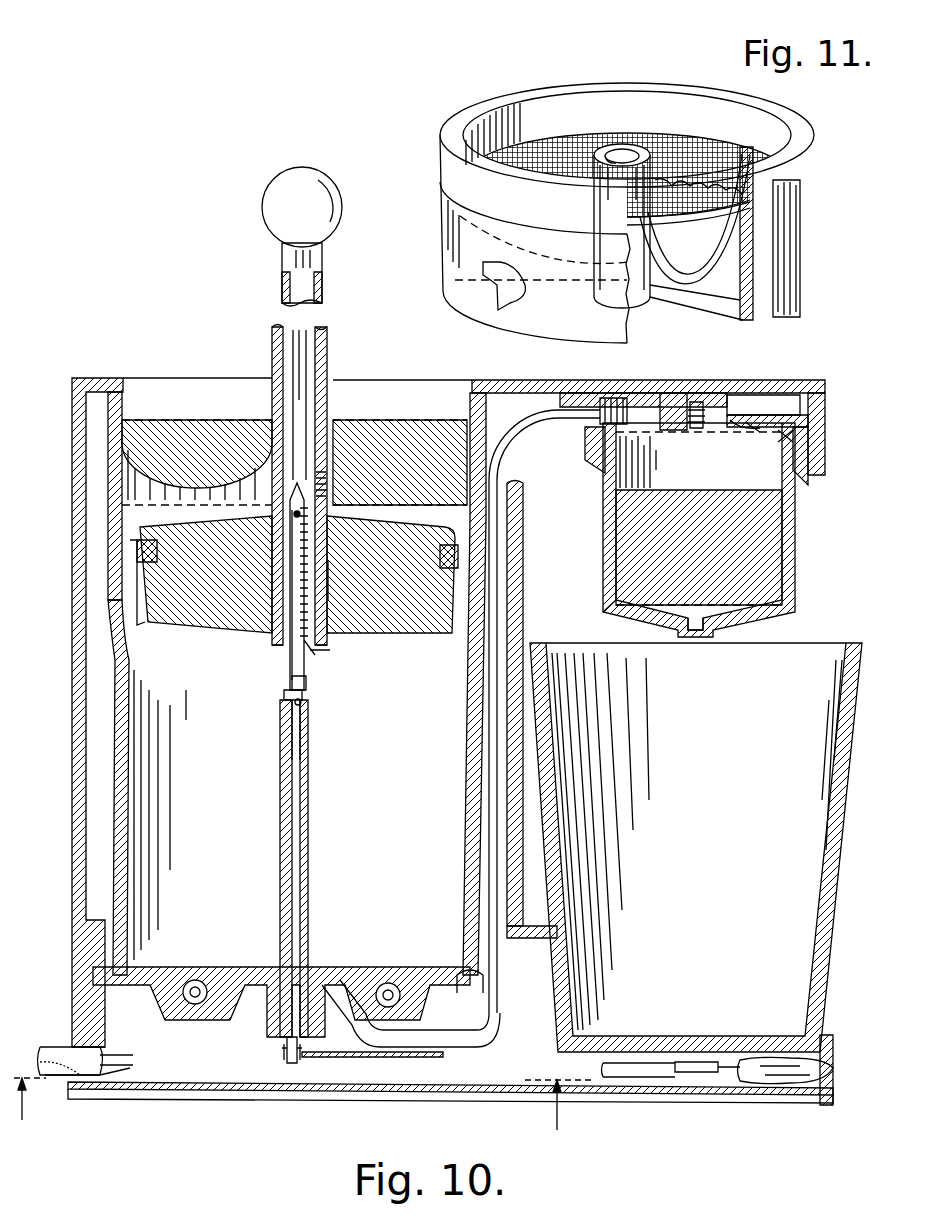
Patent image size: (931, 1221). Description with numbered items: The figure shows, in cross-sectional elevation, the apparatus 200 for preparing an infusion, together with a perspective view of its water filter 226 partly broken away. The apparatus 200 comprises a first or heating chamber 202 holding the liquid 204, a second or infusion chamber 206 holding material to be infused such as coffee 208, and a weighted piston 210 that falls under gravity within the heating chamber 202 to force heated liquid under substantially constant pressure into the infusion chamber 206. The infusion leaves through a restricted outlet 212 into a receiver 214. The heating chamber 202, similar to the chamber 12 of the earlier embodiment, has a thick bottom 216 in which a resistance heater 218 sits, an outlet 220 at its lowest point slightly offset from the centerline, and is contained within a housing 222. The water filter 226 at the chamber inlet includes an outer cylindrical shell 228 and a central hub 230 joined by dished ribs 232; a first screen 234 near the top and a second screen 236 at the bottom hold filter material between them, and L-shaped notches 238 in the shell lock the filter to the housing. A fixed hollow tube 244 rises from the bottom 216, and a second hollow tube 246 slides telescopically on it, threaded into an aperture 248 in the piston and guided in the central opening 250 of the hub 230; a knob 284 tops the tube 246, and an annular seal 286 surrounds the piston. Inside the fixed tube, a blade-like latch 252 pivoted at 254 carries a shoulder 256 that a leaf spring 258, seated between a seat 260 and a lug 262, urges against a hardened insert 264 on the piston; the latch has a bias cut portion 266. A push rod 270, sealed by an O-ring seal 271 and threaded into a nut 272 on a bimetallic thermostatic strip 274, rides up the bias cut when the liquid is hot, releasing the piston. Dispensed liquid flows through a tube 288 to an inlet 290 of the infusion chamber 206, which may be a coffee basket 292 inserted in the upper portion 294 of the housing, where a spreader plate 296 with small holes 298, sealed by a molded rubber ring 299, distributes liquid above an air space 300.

In FIG. 10, the apparatus 200 is at (184, 282).
In FIG. 10, the first or heating chamber 202 is at (118, 832).
In FIG. 10, the liquid 204 is at (242, 836).
In FIG. 10, the second or infusion chamber 206 is at (797, 546).
In FIG. 10, the coffee 208 is at (678, 553).
In FIG. 10, the weighted piston 210 is at (372, 590).
In FIG. 10, the restricted outlet 212 is at (701, 640).
In FIG. 10, the receiver 214 is at (832, 893).
In FIG. 10, the bottom 216 is at (255, 977).
In FIG. 10, the resistance heater 218 is at (197, 1006).
In FIG. 10, the outlet 220 is at (327, 984).
In FIG. 10, the housing 222 is at (73, 637).
In FIG. 10, the water filter 226 is at (137, 378).
In FIG. 11, the water filter 226 is at (501, 94).
In FIG. 11, the outer cylindrical shell 228 is at (568, 96).
In FIG. 11, the central hub 230 is at (632, 150).
In FIG. 11, the ribs 232 is at (697, 293).
In FIG. 11, the first screen 234 is at (520, 158).
In FIG. 11, the second screen 236 is at (648, 200).
In FIG. 11, the L-shaped notches 238 is at (508, 303).
In FIG. 10, the fixed hollow tube 244 is at (310, 866).
In FIG. 10, the second hollow tube 246 is at (328, 338).
In FIG. 10, the threaded aperture 248 is at (318, 544).
In FIG. 10, the central opening 250 is at (308, 385).
In FIG. 11, the central opening 250 is at (618, 146).
In FIG. 10, the latch 252 is at (290, 575).
In FIG. 10, the pivot 254 is at (328, 490).
In FIG. 10, the shoulder 256 is at (326, 647).
In FIG. 10, the leaf spring 258 is at (292, 600).
In FIG. 10, the seat 260 is at (290, 697).
In FIG. 10, the lug 262 is at (295, 517).
In FIG. 10, the hardened portion or insert 264 is at (268, 644).
In FIG. 10, the bias cut portion 266 is at (308, 679).
In FIG. 10, the push rod 270 is at (303, 760).
In FIG. 10, the O-ring seal 271 is at (305, 702).
In FIG. 10, the nut 272 is at (298, 1060).
In FIG. 10, the bimetallic thermostatic strip 274 is at (420, 1060).
In FIG. 10, the knob 284 is at (264, 190).
In FIG. 10, the annular seal 286 is at (120, 592).
In FIG. 10, the tube 288 is at (495, 878).
In FIG. 10, the inlet 290 is at (685, 428).
In FIG. 10, the coffee basket 292 is at (796, 581).
In FIG. 10, the upper portion of the housing 294 is at (787, 382).
In FIG. 10, the spreader plate 296 is at (790, 437).
In FIG. 10, the holes 298 is at (667, 398).
In FIG. 10, the molded rubber ring 299 is at (760, 430).
In FIG. 10, the air space 300 is at (722, 446).
In FIG. 10, the chamber 12 is at (303, 1117).